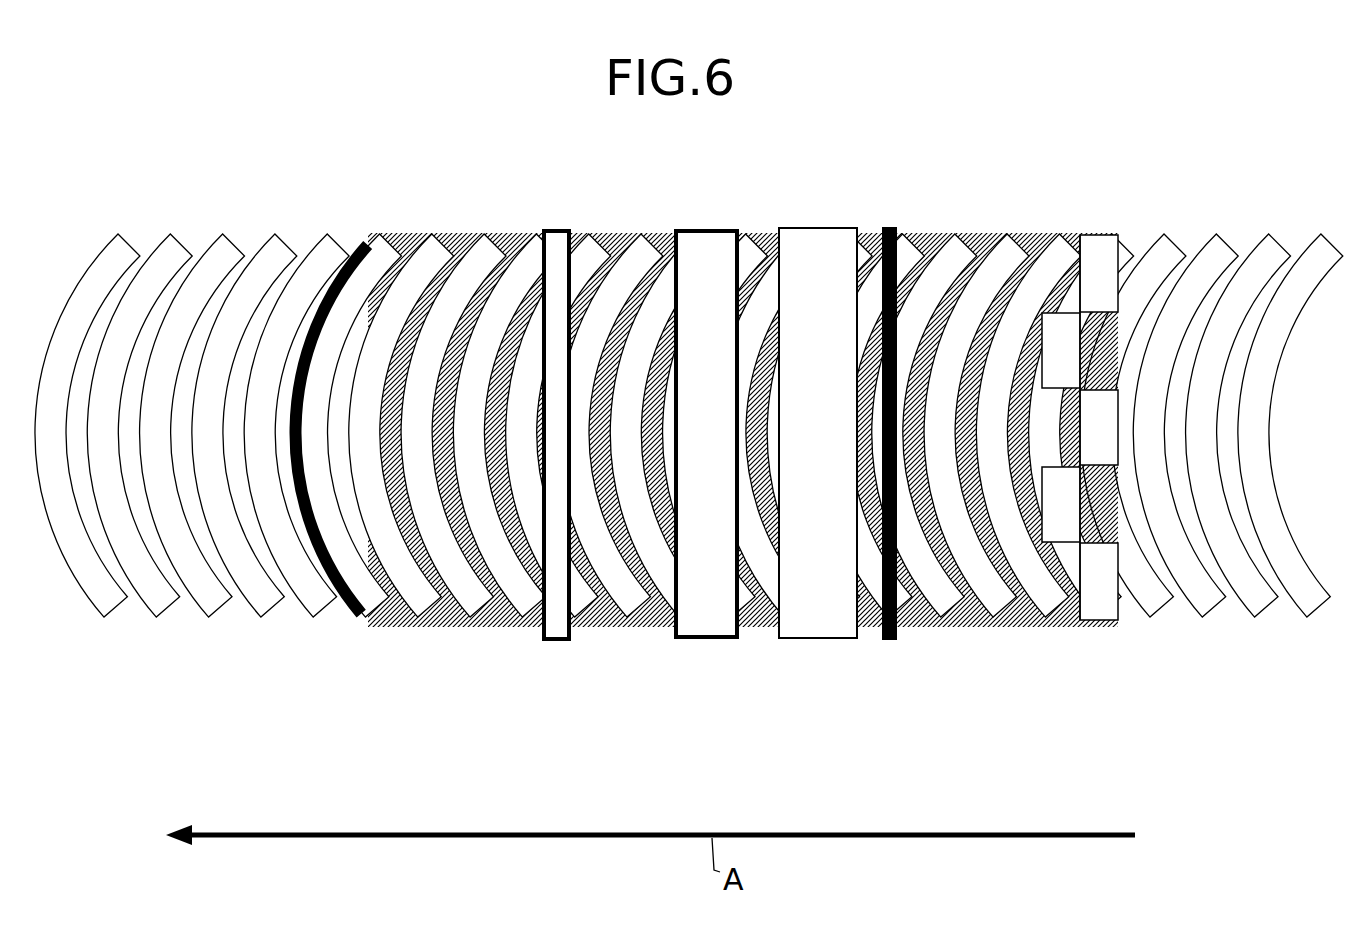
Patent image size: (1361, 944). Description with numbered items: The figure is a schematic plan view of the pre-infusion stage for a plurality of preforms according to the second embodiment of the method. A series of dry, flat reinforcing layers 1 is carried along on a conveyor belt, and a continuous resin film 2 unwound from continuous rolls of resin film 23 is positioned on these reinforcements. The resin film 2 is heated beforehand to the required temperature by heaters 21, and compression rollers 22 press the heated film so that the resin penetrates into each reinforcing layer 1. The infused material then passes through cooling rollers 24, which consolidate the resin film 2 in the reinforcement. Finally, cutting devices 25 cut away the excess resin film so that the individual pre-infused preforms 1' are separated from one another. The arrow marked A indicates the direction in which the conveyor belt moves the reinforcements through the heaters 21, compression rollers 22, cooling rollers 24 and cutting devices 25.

The dry reinforcing layer 1 is at (1212, 485).
The pre-infused preform 1' is at (192, 354).
The resin film 2 is at (975, 237).
The heaters 21 is at (817, 213).
The compression rollers 22 is at (712, 643).
The rolls of resin film 23 is at (1107, 225).
The cooling rollers 24 is at (542, 216).
The cutting devices 25 is at (337, 620).